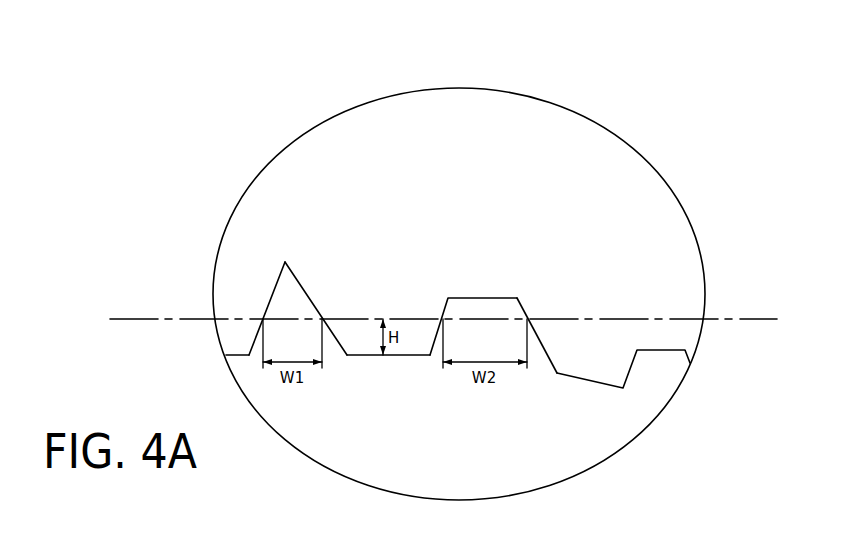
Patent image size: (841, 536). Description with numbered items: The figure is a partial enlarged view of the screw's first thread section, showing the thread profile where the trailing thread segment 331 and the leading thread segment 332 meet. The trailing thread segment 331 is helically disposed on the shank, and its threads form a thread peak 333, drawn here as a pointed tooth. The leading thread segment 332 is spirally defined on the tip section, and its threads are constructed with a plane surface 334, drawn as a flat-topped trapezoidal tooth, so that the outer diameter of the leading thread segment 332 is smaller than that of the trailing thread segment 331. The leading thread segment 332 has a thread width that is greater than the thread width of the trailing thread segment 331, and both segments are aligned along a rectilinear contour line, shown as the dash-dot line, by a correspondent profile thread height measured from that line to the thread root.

The trailing thread segment 331 is at (280, 267).
The thread peak 333 is at (285, 262).
The plane surface 334 is at (485, 298).
The leading thread segment 332 is at (520, 298).